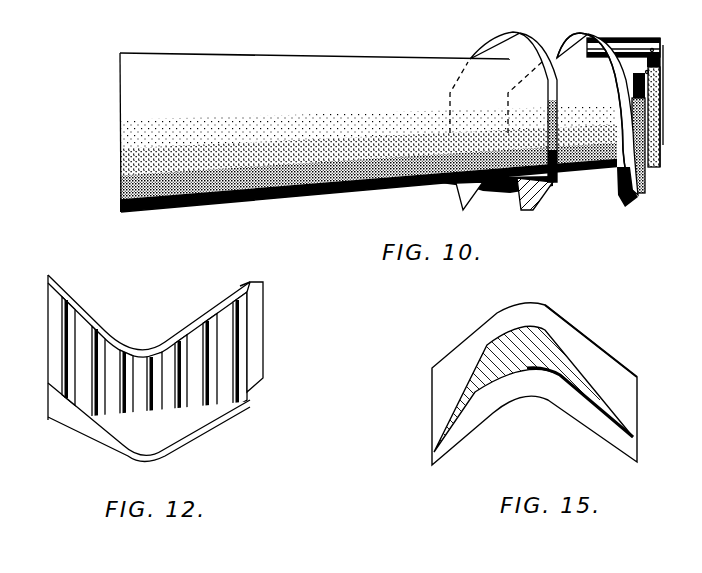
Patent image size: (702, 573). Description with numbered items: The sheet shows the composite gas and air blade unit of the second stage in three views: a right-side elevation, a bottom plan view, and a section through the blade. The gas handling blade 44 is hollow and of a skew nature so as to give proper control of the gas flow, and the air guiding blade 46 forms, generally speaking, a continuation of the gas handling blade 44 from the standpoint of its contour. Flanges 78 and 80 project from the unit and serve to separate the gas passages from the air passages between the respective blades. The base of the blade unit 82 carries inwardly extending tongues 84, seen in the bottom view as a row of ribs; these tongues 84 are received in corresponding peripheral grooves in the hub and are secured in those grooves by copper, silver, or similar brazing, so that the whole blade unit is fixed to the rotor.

In FIG. 10, the gas handling blade 44 is at (280, 198).
In FIG. 10, the air guiding blade 46 is at (582, 168).
In FIG. 10, the flange 78 is at (520, 38).
In FIG. 12, the flange 78 is at (70, 422).
In FIG. 10, the flange 80 is at (457, 190).
In FIG. 12, the flange 80 is at (250, 290).
In FIG. 12, the base of the blade unit 82 is at (260, 332).
In FIG. 15, the base of the blade unit 82 is at (614, 368).
In FIG. 10, the tongue 84 is at (638, 128).
In FIG. 12, the tongue 84 is at (153, 363).